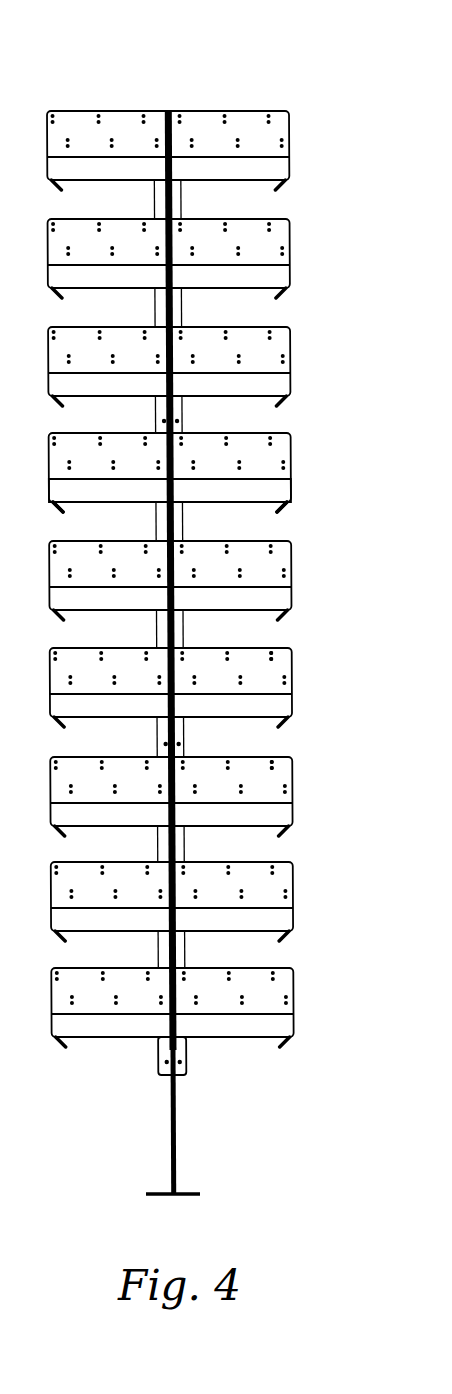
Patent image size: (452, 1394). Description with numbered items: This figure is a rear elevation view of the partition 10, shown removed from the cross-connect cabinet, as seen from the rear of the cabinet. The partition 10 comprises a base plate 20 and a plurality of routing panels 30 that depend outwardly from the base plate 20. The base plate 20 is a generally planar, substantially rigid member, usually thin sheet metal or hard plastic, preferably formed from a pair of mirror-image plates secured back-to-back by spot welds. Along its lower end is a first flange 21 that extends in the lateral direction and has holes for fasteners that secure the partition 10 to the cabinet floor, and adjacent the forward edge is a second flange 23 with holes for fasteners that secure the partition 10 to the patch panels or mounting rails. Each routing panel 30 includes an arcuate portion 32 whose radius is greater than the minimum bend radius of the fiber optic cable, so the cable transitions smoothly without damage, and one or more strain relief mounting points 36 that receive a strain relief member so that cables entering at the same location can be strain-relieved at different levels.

The partition 10 is at (230, 606).
The base plate 20 is at (170, 1087).
The first flange 21 is at (180, 1192).
The second flange 23 is at (154, 1054).
The routing panel 30 is at (281, 447).
The arcuate portion 32 is at (261, 492).
The strain relief mounting point 36 is at (269, 656).